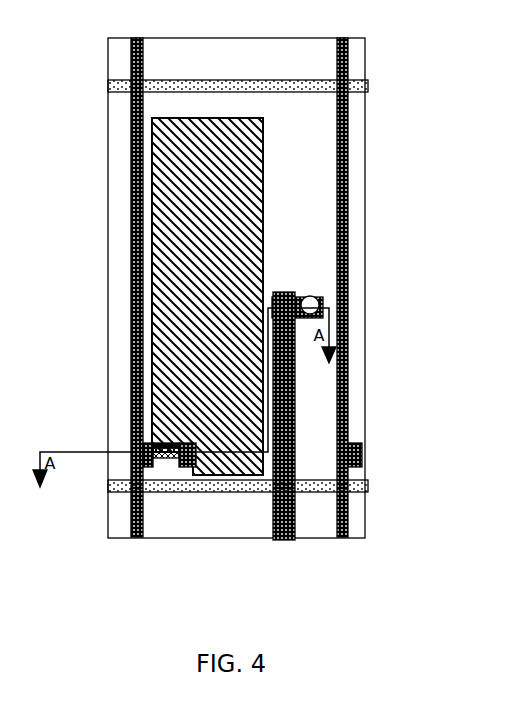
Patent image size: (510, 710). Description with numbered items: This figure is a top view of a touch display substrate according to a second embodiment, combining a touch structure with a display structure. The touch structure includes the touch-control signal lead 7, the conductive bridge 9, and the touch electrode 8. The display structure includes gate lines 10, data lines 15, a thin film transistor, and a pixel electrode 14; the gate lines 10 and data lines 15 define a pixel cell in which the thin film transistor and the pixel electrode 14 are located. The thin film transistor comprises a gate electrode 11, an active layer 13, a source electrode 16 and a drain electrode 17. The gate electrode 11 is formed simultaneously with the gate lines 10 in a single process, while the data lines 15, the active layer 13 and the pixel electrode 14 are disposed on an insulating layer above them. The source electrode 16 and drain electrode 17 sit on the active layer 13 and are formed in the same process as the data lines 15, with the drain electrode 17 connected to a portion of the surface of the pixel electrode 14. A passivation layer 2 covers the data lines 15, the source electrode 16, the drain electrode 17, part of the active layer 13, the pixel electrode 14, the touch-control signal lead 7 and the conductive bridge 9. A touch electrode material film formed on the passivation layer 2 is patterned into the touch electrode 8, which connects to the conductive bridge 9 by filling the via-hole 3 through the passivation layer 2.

The passivation layer 2 is at (365, 194).
The via-hole 3 is at (315, 303).
The touch-control signal lead 7 is at (295, 382).
The touch electrode 8 is at (357, 238).
The conductive bridge 9 is at (318, 301).
The gate lines 10 is at (353, 487).
The gate electrode 11 is at (162, 458).
The active layer 13 is at (152, 445).
The pixel electrode 14 is at (229, 457).
The data lines 15 is at (136, 340).
The source electrode 16 is at (148, 449).
The drain electrode 17 is at (192, 467).